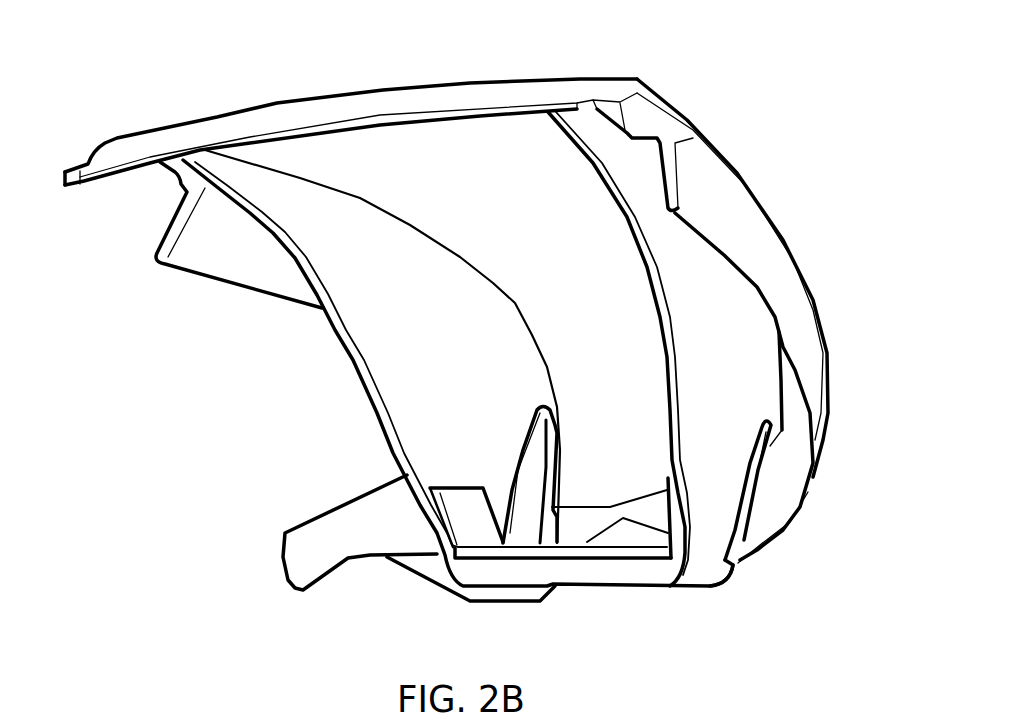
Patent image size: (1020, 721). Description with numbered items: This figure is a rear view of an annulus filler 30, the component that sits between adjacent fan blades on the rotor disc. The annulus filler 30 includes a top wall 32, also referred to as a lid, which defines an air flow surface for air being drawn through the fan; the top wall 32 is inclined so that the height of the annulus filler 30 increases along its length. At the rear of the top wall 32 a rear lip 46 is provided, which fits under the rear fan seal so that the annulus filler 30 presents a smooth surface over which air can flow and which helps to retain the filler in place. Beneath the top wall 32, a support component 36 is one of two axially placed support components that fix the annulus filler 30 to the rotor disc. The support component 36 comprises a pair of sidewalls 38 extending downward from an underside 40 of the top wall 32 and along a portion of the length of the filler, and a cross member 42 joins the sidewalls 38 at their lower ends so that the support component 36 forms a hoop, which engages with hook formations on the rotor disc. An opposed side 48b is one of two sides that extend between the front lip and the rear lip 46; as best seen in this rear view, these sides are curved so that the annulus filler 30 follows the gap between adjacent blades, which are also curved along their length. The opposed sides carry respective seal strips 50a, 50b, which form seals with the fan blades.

The annulus filler 30 is at (158, 62).
The top wall 32 is at (663, 103).
The support component 36 is at (772, 562).
The sidewalls 38 is at (453, 410).
The underside 40 is at (512, 259).
The cross member 42 is at (603, 572).
The rear lip 46 is at (453, 102).
The opposed side 48b is at (737, 172).
The seal strip 50a is at (252, 267).
The seal strip 50b is at (778, 303).